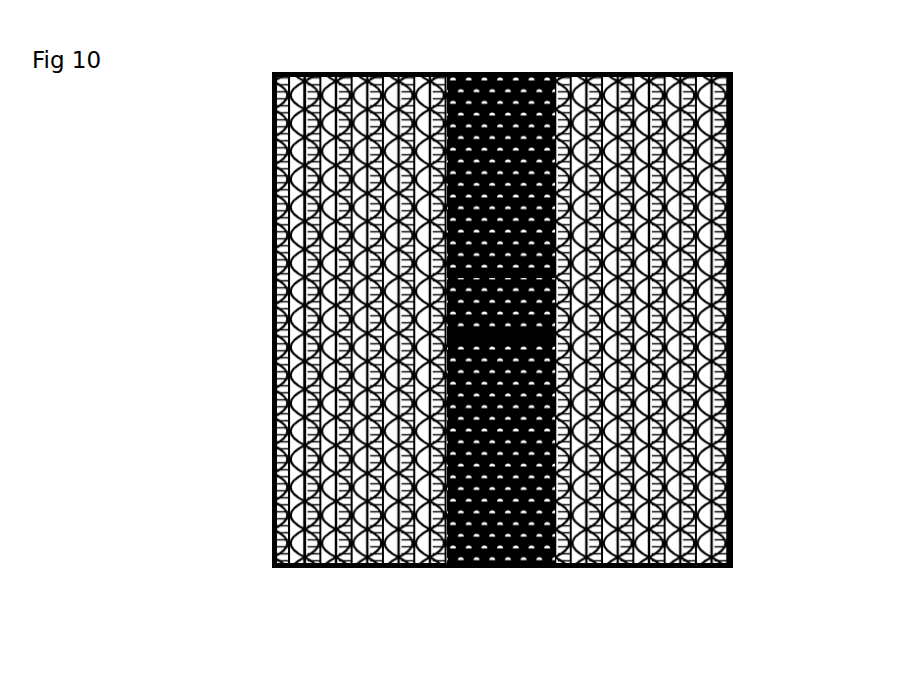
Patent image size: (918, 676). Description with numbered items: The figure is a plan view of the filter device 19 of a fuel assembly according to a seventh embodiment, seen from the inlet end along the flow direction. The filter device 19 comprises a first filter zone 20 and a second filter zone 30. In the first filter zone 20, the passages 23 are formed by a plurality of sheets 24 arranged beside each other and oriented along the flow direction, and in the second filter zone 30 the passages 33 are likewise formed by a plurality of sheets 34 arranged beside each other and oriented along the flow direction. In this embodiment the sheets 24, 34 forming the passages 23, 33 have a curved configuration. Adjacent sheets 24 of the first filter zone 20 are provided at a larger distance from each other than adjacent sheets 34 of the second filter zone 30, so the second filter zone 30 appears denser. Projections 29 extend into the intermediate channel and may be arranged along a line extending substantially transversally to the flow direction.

The filter device 19 is at (257, 107).
The first filter zone 20 is at (341, 72).
The second filter zone 30 is at (511, 72).
The projections 29 is at (733, 203).
The sheets 24 is at (272, 171).
The passages 23 is at (272, 235).
The sheets 34 is at (455, 272).
The passages 33 is at (447, 337).